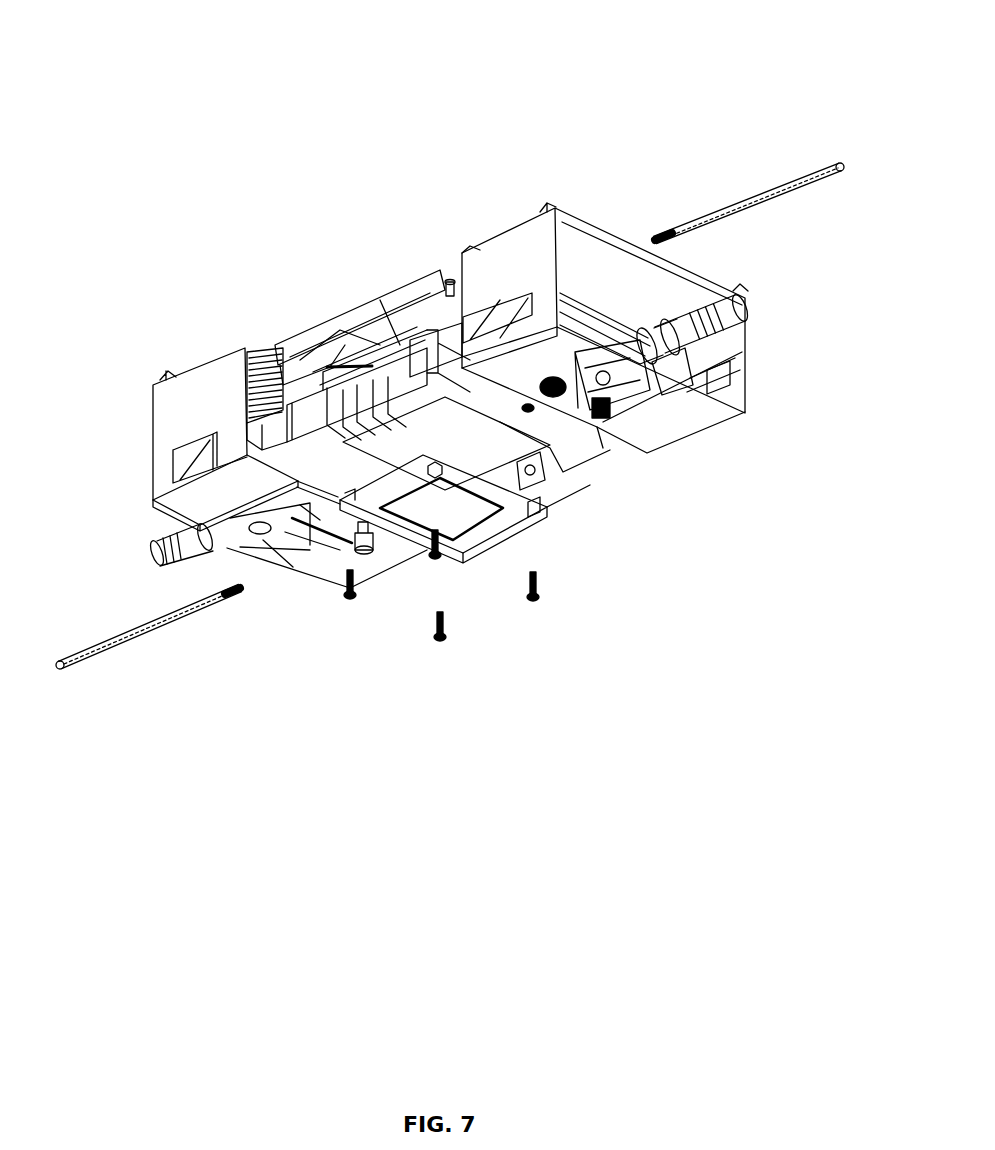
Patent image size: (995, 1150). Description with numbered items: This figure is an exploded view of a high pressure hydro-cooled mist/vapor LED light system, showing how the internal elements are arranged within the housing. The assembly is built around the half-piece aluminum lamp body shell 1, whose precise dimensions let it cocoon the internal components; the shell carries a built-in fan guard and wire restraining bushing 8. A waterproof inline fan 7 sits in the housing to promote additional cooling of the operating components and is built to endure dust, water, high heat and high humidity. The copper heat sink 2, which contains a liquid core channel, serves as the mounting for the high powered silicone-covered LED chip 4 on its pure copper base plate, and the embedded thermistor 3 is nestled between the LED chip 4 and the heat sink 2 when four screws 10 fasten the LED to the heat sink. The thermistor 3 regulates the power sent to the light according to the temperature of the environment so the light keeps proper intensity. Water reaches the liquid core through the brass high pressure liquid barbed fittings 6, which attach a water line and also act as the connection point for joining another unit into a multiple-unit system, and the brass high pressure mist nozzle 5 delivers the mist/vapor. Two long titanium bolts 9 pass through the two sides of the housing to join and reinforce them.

The aluminum lamp body shell 1 is at (748, 356).
The copper heat sink 2 is at (575, 440).
The thermistor 3 is at (410, 438).
The LED chip 4 is at (490, 545).
The brass high pressure mist nozzle 5 is at (543, 480).
The brass high pressure liquid barbed fitting 6 is at (748, 306).
The inline fan 7 is at (350, 315).
The fan guard and wire restraining bushing 8 is at (160, 372).
The titanium bolts 9 is at (836, 165).
The screws 10 is at (440, 640).